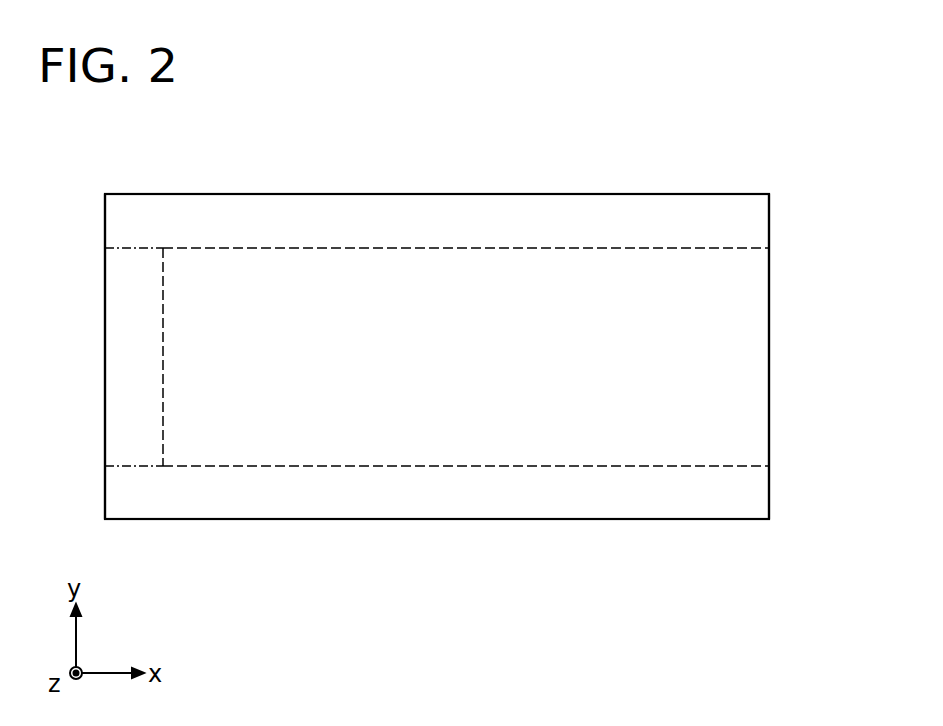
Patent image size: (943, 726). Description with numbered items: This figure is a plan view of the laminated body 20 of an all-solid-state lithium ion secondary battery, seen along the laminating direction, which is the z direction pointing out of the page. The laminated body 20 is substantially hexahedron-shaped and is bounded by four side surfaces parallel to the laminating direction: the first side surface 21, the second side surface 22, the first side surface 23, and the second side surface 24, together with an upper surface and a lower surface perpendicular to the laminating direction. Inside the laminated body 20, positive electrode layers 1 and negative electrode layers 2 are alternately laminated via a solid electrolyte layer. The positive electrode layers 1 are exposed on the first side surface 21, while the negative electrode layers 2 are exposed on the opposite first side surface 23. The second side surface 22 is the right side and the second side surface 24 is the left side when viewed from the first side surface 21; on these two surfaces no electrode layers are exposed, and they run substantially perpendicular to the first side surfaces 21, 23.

The laminated body 20 is at (762, 156).
The first side surface 21 is at (769, 368).
The second side surface 22 is at (460, 194).
The first side surface 23 is at (105, 348).
The second side surface 24 is at (430, 519).
The positive electrode layer 1 is at (218, 311).
The negative electrode layer 2 is at (135, 420).